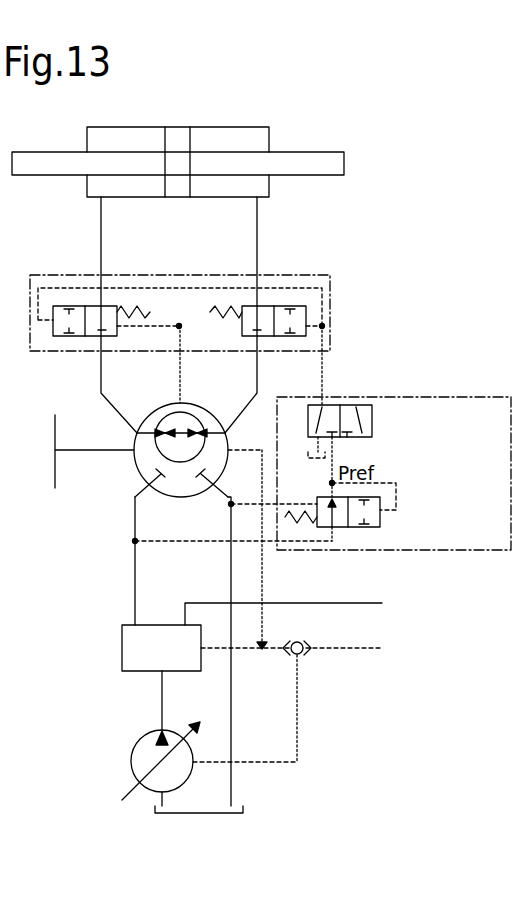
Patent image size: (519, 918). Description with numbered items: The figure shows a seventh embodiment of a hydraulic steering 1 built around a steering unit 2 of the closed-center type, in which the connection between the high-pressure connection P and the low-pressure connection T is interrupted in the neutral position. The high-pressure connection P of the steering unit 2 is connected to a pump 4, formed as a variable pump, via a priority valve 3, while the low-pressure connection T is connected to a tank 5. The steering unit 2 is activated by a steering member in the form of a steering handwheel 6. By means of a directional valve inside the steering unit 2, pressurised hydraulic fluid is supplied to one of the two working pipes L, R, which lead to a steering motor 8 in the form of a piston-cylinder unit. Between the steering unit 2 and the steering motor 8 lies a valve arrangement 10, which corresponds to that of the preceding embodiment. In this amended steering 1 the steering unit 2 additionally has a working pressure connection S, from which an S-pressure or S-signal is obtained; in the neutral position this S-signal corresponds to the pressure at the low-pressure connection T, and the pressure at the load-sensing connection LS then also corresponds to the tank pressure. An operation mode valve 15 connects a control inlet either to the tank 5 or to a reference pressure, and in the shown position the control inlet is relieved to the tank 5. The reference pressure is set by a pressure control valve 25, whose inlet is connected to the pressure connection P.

The steering 1 is at (374, 148).
The steering unit 2 is at (143, 453).
The priority valve 3 is at (130, 641).
The pump 4 is at (136, 760).
The tank 5 is at (224, 814).
The steering handwheel 6 is at (52, 424).
The steering motor 8 is at (238, 133).
The valve arrangement 10 is at (331, 292).
The operation mode valve 15 is at (378, 425).
The pressure control valve 25 is at (383, 537).